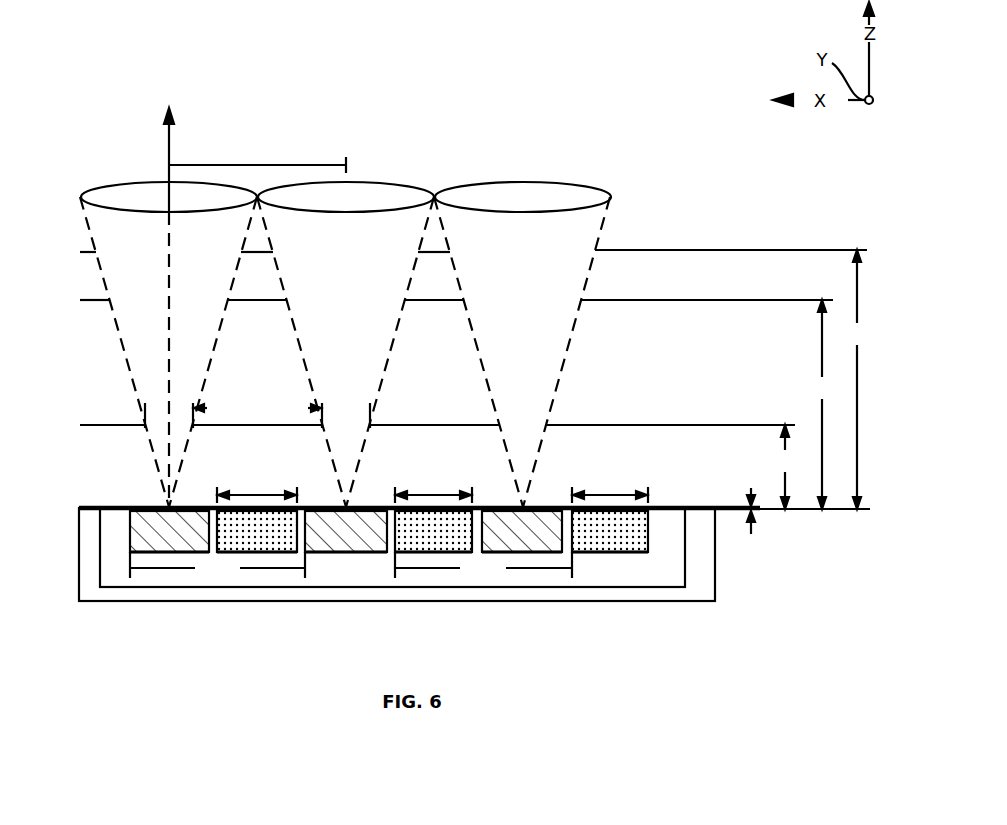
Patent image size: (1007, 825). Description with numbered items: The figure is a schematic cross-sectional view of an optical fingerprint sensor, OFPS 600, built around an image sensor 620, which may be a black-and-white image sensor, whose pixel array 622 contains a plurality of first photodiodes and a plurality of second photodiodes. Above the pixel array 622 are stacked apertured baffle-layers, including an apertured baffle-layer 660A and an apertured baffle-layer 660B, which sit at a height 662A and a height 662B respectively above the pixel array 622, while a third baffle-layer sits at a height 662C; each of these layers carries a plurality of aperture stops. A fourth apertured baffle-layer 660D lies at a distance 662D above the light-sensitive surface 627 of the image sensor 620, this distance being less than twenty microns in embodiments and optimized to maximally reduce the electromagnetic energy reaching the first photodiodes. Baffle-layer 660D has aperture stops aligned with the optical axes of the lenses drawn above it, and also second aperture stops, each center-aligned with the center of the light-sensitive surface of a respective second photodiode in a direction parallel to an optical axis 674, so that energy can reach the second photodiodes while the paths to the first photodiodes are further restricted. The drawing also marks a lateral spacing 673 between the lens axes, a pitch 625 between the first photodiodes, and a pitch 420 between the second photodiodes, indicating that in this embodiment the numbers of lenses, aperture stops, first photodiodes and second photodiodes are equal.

The OFPS 600 is at (129, 52).
The optical axis 674 is at (168, 157).
The pitch of emitters 673 is at (257, 157).
The apertured baffle-layer 660A is at (652, 249).
The apertured baffle-layer 660B is at (680, 300).
The fourth apertured baffle-layer 660D is at (668, 507).
The height 662A is at (855, 379).
The height 662B is at (822, 404).
The height 662C is at (786, 467).
The distance 662D is at (752, 524).
The light-sensitive surface 627 is at (107, 497).
The pitch between light emitters 625 is at (217, 565).
The pitch between photodetectors 420 is at (483, 565).
The pixel array 622 is at (672, 572).
The image sensor 620 is at (703, 587).